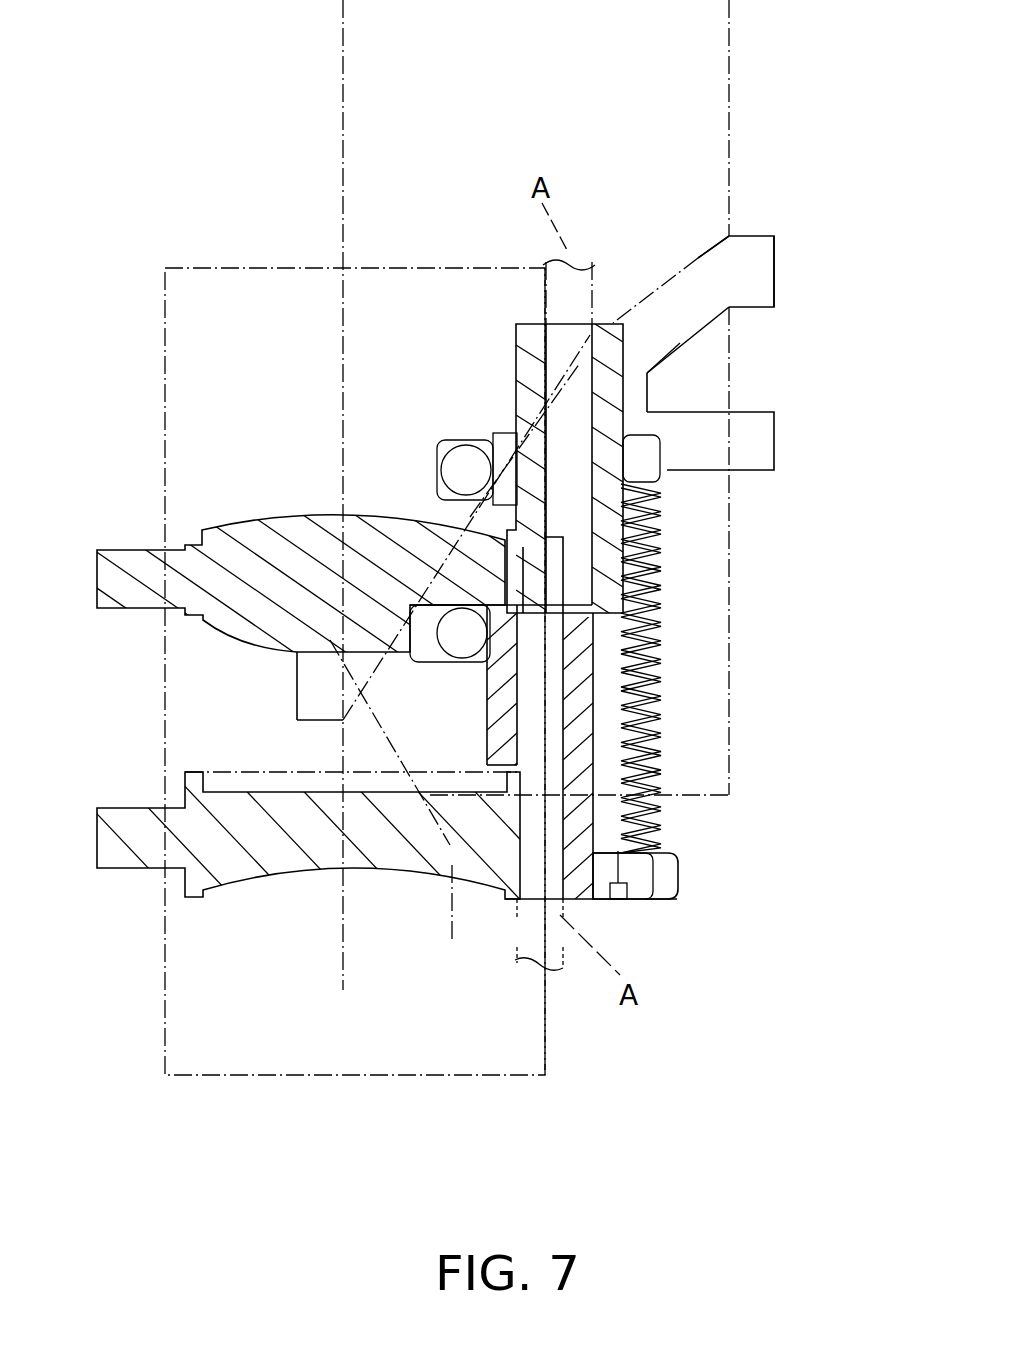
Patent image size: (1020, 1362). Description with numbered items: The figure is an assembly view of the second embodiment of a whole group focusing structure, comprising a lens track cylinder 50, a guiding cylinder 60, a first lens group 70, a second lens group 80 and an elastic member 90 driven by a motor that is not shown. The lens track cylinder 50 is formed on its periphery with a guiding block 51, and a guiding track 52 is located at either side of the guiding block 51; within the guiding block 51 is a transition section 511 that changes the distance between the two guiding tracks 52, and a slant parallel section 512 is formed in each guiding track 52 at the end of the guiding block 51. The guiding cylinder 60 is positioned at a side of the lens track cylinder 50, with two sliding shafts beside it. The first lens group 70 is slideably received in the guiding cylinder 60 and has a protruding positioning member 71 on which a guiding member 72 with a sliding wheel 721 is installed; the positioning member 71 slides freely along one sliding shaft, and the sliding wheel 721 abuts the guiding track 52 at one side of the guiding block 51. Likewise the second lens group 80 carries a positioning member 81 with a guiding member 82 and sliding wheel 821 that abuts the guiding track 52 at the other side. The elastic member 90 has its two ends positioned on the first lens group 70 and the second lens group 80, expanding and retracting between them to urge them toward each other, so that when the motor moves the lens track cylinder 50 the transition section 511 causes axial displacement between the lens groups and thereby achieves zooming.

The lens track cylinder 50 is at (718, 67).
The guiding block 51 is at (786, 205).
The guiding track 52 is at (746, 237).
The transition section 511 is at (673, 313).
The slant parallel section 512 is at (767, 273).
The guiding cylinder 60 is at (537, 1028).
The first lens group 70 is at (220, 547).
The positioning member 71 is at (640, 548).
The guiding member 72 is at (440, 442).
The sliding wheel 721 is at (462, 477).
The second lens group 80 is at (202, 817).
The positioning member 81 is at (630, 617).
The guiding member 82 is at (435, 645).
The sliding wheel 821 is at (470, 652).
The elastic member 90 is at (668, 835).